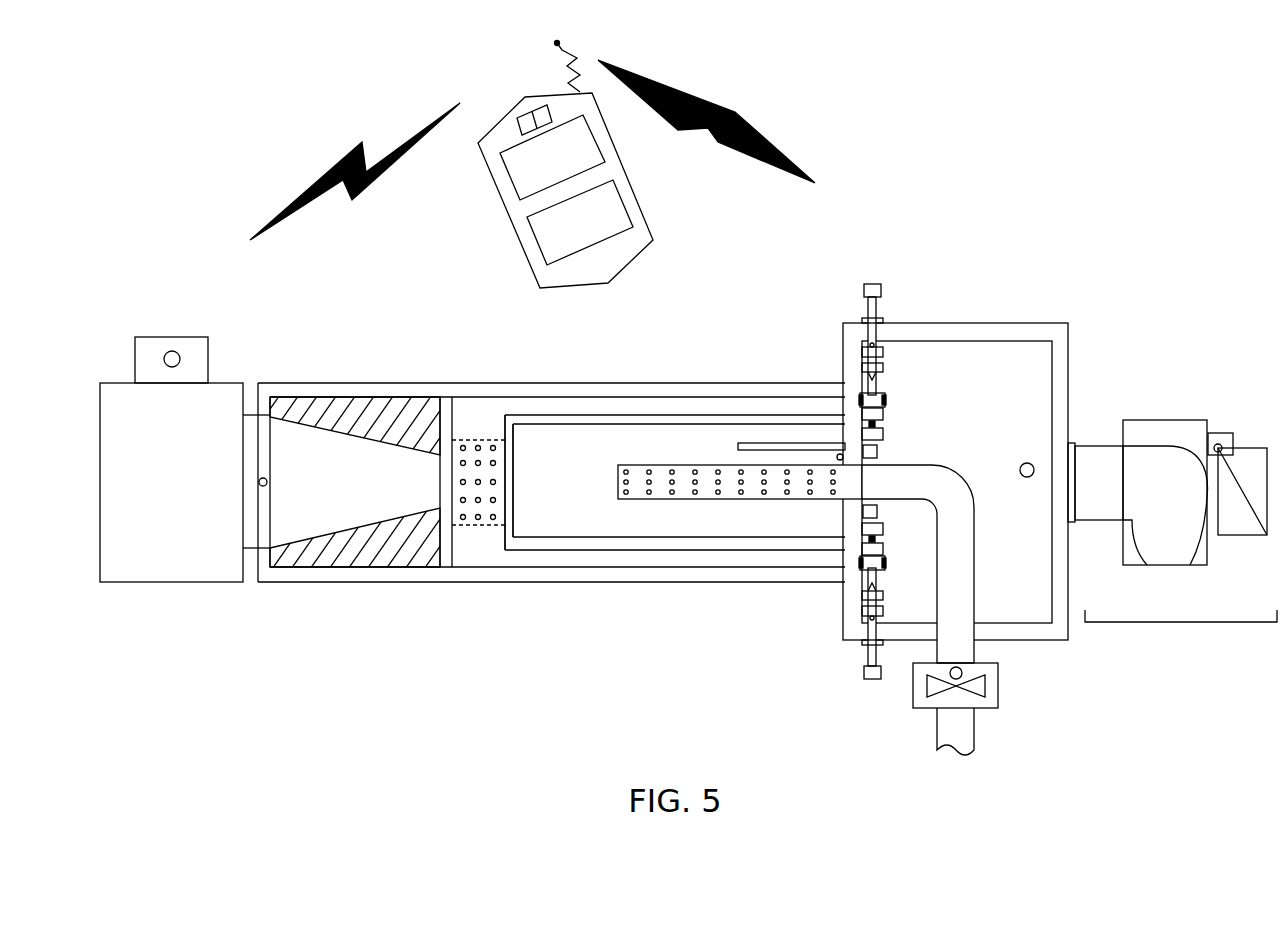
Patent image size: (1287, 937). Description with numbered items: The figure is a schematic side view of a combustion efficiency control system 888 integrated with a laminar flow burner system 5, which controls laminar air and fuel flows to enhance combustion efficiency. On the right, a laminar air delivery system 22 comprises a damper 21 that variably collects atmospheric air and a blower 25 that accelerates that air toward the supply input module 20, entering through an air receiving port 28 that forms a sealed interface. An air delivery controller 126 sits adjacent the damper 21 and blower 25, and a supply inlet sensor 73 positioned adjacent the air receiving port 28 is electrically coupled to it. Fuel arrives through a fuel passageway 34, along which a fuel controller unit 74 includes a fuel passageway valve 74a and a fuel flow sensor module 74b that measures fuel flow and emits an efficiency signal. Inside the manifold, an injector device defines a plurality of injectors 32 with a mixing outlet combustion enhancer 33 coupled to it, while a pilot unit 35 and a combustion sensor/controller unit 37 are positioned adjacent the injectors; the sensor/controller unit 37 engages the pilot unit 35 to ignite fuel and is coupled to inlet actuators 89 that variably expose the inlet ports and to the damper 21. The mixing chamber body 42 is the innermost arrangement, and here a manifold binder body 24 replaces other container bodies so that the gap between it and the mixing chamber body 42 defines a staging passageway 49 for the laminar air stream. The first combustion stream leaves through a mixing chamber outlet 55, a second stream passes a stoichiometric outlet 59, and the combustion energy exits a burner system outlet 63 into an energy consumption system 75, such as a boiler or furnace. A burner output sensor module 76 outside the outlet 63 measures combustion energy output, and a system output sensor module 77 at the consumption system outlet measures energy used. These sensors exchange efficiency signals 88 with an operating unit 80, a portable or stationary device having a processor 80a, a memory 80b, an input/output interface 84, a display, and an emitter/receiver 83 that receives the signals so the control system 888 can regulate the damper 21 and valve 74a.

The laminar flow burner system 5 is at (808, 295).
The supply input module 20 is at (1032, 322).
The damper 21 is at (1245, 530).
The laminar air delivery system 22 is at (1183, 625).
The manifold binder body 24 is at (465, 577).
The blower 25 is at (1163, 426).
The air receiving port 28 is at (1060, 507).
The injectors 32 is at (672, 500).
The mixing outlet combustion enhancer 33 is at (620, 480).
The fuel passageway 34 is at (960, 586).
The pilot unit 35 is at (750, 443).
The combustion sensor/controller unit 37 is at (836, 457).
The mixing chamber body 42 is at (612, 424).
The staging passageway 49 is at (637, 552).
The mixing chamber outlet 55 is at (512, 447).
The stoichiometric outlet 59 is at (445, 464).
The burner system outlet 63 is at (268, 507).
The supply inlet sensor 73 is at (1026, 462).
The fuel controller unit 74 is at (993, 723).
The fuel passageway valve 74a is at (987, 687).
The fuel flow sensor module 74b is at (965, 671).
The energy consumption system 75 is at (153, 481).
The burner output sensor module 76 is at (268, 476).
The system output sensor module 77 is at (170, 350).
The operating unit 80 is at (510, 213).
The processor 80a is at (515, 126).
The memory 80b is at (545, 113).
The emitter/receiver 83 is at (565, 57).
The input/output interface 84 is at (592, 232).
The efficiency signals 88 is at (345, 158).
The inlet actuators 89 is at (878, 402).
The air delivery controller 126 is at (1222, 432).
The combustion efficiency control system 888 is at (1077, 120).